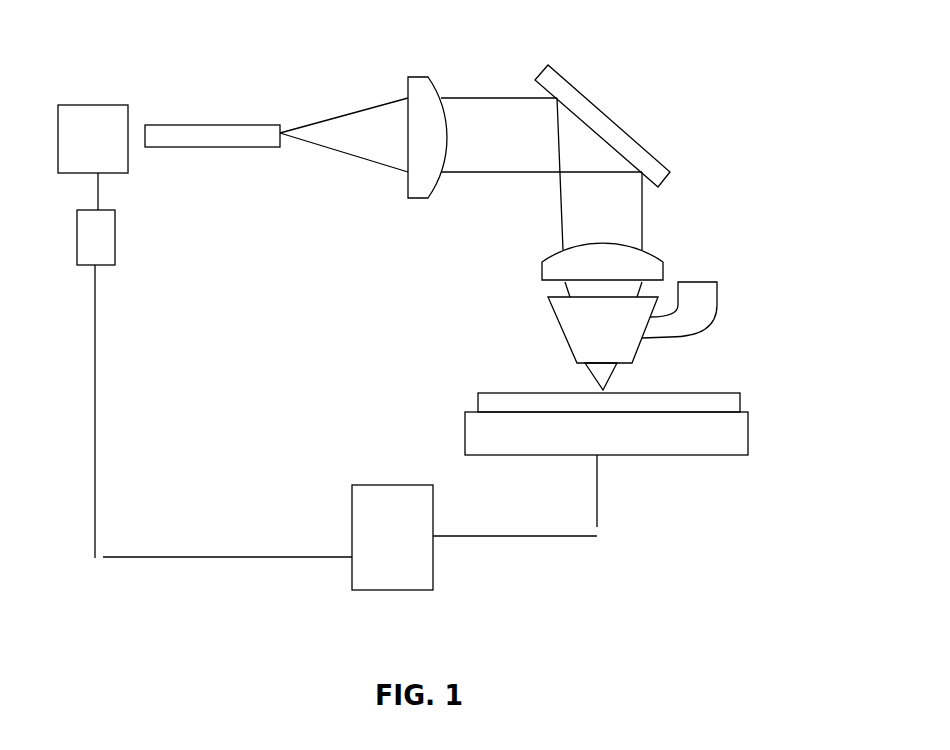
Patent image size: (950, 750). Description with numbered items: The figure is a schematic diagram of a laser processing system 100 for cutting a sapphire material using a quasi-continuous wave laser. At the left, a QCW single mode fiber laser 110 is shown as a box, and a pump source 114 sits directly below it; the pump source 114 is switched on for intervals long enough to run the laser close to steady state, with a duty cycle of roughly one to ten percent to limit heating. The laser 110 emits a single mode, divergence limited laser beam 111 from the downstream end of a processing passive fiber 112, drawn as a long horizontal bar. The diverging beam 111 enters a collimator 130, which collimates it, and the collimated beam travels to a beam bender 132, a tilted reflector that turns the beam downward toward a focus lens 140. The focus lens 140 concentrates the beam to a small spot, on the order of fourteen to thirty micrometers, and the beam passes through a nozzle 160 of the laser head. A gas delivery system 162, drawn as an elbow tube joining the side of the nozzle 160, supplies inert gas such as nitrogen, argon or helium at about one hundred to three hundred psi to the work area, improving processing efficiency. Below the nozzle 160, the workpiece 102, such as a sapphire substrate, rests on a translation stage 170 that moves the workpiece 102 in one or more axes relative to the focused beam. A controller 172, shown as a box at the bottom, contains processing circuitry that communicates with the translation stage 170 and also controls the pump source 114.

The laser processing system 100 is at (253, 338).
The workpiece 102 is at (517, 397).
The QCW single mode fiber laser 110 is at (90, 133).
The laser beam 111 is at (337, 133).
The processing passive fiber 112 is at (177, 125).
The pump source 114 is at (85, 253).
The collimator 130 is at (425, 88).
The beam bender 132 is at (562, 87).
The focus lens 140 is at (557, 270).
The nozzle 160 is at (623, 336).
The gas delivery system 162 is at (702, 298).
The translation stage 170 is at (480, 437).
The controller 172 is at (410, 551).